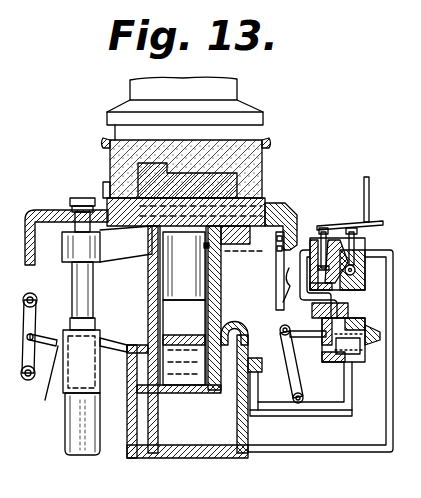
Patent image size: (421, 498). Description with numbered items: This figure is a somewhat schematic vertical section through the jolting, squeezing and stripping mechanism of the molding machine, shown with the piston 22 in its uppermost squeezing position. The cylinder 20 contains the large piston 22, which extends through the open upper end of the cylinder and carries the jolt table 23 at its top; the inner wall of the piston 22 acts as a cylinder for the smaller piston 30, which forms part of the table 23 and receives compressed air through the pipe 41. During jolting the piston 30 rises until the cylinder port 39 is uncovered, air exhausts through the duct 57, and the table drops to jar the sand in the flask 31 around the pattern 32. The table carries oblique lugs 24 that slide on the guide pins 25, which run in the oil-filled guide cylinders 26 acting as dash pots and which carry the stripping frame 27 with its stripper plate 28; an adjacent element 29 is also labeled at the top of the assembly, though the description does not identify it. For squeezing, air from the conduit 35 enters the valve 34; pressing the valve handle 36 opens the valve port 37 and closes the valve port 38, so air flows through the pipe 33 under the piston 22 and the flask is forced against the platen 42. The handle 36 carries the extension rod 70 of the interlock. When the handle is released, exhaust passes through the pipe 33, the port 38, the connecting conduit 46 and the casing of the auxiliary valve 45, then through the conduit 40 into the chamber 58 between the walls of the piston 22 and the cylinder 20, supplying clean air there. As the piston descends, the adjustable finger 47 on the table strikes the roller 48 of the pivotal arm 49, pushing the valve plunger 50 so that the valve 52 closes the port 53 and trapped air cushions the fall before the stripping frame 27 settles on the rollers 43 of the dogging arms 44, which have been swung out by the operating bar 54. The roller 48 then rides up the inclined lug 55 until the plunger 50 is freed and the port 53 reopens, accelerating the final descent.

The cylinder 20 is at (127, 442).
The piston 22 is at (148, 297).
The jolt table 23 is at (231, 236).
The lugs 24 is at (96, 250).
The guide pins 25 is at (72, 296).
The guide cylinders 26 is at (65, 436).
The stripping frame 27 is at (63, 210).
The stripper plate 28 is at (280, 206).
The plate 29 is at (104, 180).
The piston 30 is at (165, 272).
The flask 31 is at (268, 152).
The pattern 32 is at (232, 160).
The pipe 33 is at (358, 453).
The valve 34 is at (358, 266).
The conduit 35 is at (355, 283).
The valve handle 36 is at (374, 222).
The valve port 37 is at (358, 253).
The valve port 38 is at (322, 232).
The cylinder port 39 is at (218, 392).
The conduit 40 is at (312, 418).
The pipe 41 is at (204, 245).
The platen 42 is at (115, 127).
The rollers 43 is at (29, 326).
The dogging arms 44 is at (22, 320).
The auxiliary valve 45 is at (372, 362).
The connecting conduit 46 is at (300, 303).
The finger 47 is at (276, 270).
The roller 48 is at (280, 334).
The pivotal arm 49 is at (285, 396).
The valve plunger 50 is at (312, 345).
The valve 52 is at (337, 366).
The port 53 is at (350, 314).
The operating bar 54 is at (42, 373).
The lug 55 is at (297, 285).
The duct 57 is at (128, 340).
The chamber 58 is at (215, 332).
The extension rod 70 is at (364, 190).